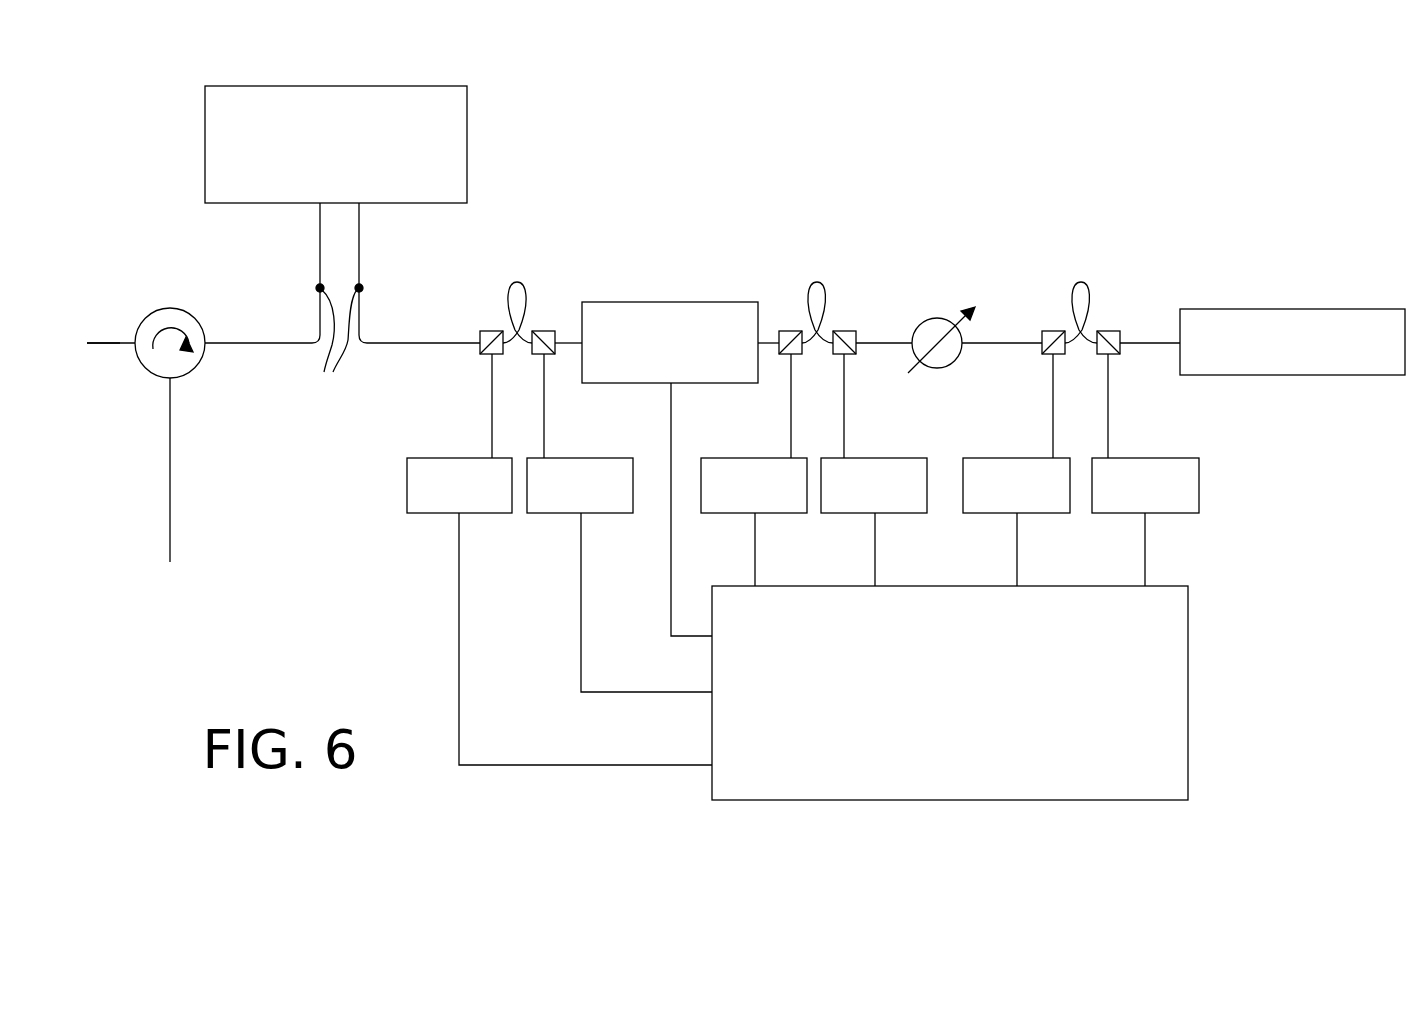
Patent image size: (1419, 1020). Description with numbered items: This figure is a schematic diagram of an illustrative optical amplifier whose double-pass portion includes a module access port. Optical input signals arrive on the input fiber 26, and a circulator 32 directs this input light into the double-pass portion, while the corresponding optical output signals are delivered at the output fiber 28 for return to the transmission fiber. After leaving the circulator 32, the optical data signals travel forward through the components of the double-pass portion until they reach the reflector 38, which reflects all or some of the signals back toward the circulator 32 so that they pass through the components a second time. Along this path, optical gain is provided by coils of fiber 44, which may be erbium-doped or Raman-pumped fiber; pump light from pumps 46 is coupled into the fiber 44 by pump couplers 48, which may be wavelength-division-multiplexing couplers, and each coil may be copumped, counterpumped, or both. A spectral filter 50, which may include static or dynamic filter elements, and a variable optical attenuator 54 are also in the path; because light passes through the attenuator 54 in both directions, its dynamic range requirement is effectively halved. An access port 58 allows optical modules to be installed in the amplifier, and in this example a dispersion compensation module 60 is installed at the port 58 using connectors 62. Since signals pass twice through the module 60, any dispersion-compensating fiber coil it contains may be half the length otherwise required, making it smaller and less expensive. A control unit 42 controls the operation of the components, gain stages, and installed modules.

The input fiber 26 is at (98, 350).
The output fiber 28 is at (170, 518).
The circulator 32 is at (135, 358).
The reflector 38 is at (1250, 308).
The control unit 42 is at (767, 800).
The coils of fiber 44 is at (559, 285).
The pumps 46 is at (570, 513).
The pump couplers 48 is at (497, 355).
The spectral filter 50 is at (710, 302).
The variable optical attenuator 54 is at (927, 313).
The access port 58 is at (400, 286).
The dispersion compensation module 60 is at (467, 140).
The connectors 62 is at (328, 345).